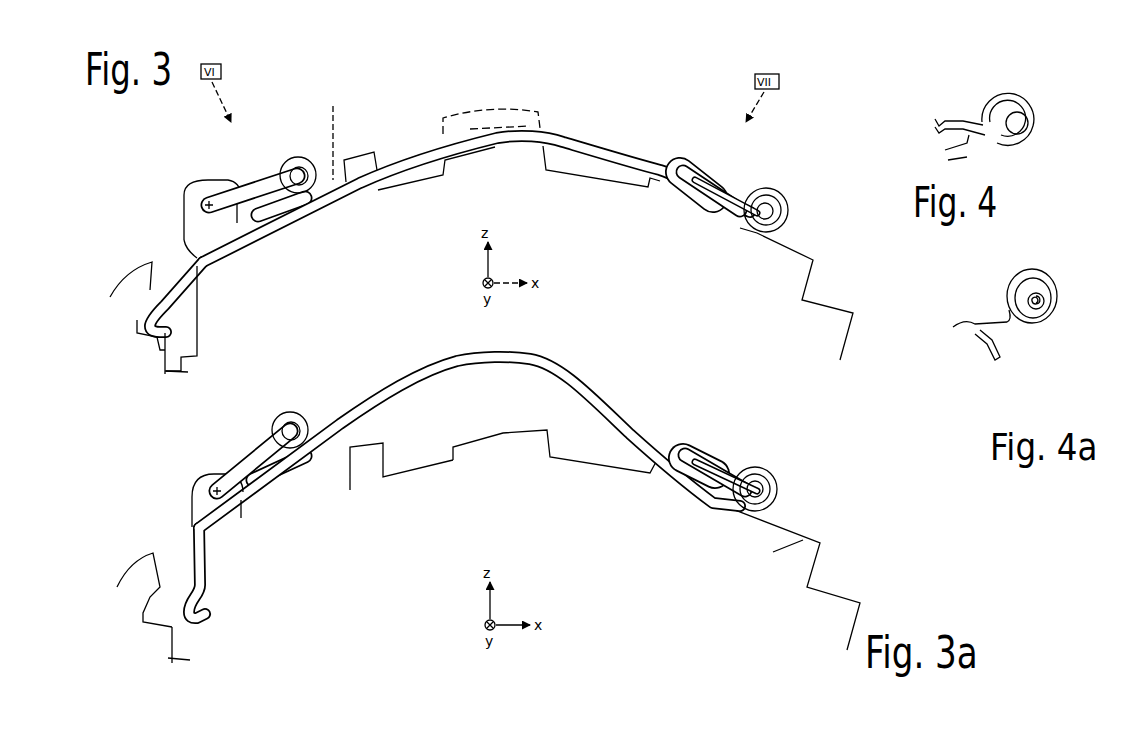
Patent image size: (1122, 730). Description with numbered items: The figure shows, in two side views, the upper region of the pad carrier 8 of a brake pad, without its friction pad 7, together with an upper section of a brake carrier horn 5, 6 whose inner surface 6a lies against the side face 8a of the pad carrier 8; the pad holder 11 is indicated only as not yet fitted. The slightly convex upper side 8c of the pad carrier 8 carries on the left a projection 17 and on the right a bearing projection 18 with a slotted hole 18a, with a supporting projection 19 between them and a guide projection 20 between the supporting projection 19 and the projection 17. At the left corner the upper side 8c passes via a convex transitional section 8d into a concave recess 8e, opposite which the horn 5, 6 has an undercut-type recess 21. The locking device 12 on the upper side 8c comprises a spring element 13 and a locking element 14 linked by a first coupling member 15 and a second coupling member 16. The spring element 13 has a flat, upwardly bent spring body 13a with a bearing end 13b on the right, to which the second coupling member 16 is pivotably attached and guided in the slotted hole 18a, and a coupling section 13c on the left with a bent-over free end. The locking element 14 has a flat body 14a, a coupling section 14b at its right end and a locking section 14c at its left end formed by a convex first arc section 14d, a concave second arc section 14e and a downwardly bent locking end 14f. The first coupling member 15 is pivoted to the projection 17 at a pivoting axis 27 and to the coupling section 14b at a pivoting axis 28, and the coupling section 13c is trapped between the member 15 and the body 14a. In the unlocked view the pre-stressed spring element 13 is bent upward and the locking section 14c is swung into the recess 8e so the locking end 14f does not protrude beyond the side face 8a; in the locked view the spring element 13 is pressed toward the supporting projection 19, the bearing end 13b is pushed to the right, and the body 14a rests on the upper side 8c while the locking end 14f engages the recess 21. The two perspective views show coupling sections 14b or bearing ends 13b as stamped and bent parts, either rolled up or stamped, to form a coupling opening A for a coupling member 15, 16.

In FIG. 3, the brake carrier horn 5 is at (115, 284).
In FIG. 3A, the brake carrier horn 5 is at (112, 587).
In FIG. 3, the brake carrier horn 6 is at (120, 287).
In FIG. 3A, the brake carrier horn 6 is at (125, 578).
In FIG. 3, the inner surface 6a is at (180, 373).
In FIG. 3A, the inner surface 6a is at (185, 660).
In FIG. 3, the friction pad 7 is at (519, 149).
In FIG. 3A, the friction pad 7 is at (805, 577).
In FIG. 3, the pad carrier 8 is at (592, 190).
In FIG. 3A, the pad carrier 8 is at (805, 542).
In FIG. 3, the side face 8a is at (163, 372).
In FIG. 3A, the side face 8a is at (183, 645).
In FIG. 3, the upper side 8c is at (828, 212).
In FIG. 3, the transitional section 8d is at (228, 268).
In FIG. 3A, the transitional section 8d is at (237, 546).
In FIG. 3, the recess 8e is at (199, 357).
In FIG. 3A, the recess 8e is at (208, 598).
In FIG. 3, the pad holder 11 is at (520, 106).
In FIG. 3, the locking device 12 is at (430, 104).
In FIG. 3A, the locking device 12 is at (446, 340).
In FIG. 3, the spring element 13 is at (434, 234).
In FIG. 3A, the spring element 13 is at (464, 467).
In FIG. 3, the spring body 13a is at (428, 148).
In FIG. 3A, the spring body 13a is at (386, 388).
In FIG. 4, the spring body 13a is at (942, 117).
In FIG. 4A, the spring body 13a is at (992, 362).
In FIG. 3, the bearing end 13b is at (756, 236).
In FIG. 3A, the bearing end 13b is at (772, 490).
In FIG. 4, the bearing end 13b is at (1023, 117).
In FIG. 4A, the bearing end 13b is at (1042, 289).
In FIG. 3, the coupling section 13c is at (280, 222).
In FIG. 3A, the coupling section 13c is at (302, 482).
In FIG. 3, the locking element 14 is at (176, 265).
In FIG. 3A, the locking element 14 is at (290, 494).
In FIG. 3, the body 14a is at (245, 250).
In FIG. 3A, the body 14a is at (243, 508).
In FIG. 4, the body 14a is at (942, 119).
In FIG. 4A, the body 14a is at (996, 362).
In FIG. 3, the coupling section 14b is at (295, 114).
In FIG. 3A, the coupling section 14b is at (303, 393).
In FIG. 4, the coupling section 14b is at (1023, 117).
In FIG. 4A, the coupling section 14b is at (1042, 289).
In FIG. 3, the locking section 14c is at (158, 348).
In FIG. 3A, the locking section 14c is at (205, 610).
In FIG. 3, the first arc section 14d is at (206, 266).
In FIG. 3A, the first arc section 14d is at (194, 530).
In FIG. 3, the second arc section 14e is at (176, 290).
In FIG. 3A, the second arc section 14e is at (195, 575).
In FIG. 3, the locking end 14f is at (140, 323).
In FIG. 3A, the locking end 14f is at (195, 625).
In FIG. 3, the first coupling member 15 is at (250, 183).
In FIG. 3A, the first coupling member 15 is at (250, 480).
In FIG. 3, the second coupling member 16 is at (748, 190).
In FIG. 3A, the second coupling member 16 is at (733, 467).
In FIG. 3, the projection 17 is at (188, 182).
In FIG. 3A, the projection 17 is at (190, 488).
In FIG. 3, the bearing projection 18 is at (667, 158).
In FIG. 3A, the bearing projection 18 is at (675, 444).
In FIG. 3, the slotted hole 18a is at (692, 160).
In FIG. 3A, the slotted hole 18a is at (693, 440).
In FIG. 3, the supporting projection 19 is at (508, 153).
In FIG. 3A, the supporting projection 19 is at (492, 445).
In FIG. 3, the guide projection 20 is at (358, 158).
In FIG. 3A, the guide projection 20 is at (388, 468).
In FIG. 3, the recess 21 is at (140, 258).
In FIG. 3A, the recess 21 is at (145, 608).
In FIG. 3, the pivoting axis 27 is at (209, 198).
In FIG. 3A, the pivoting axis 27 is at (214, 482).
In FIG. 3, the pivoting axis 28 is at (290, 170).
In FIG. 3A, the pivoting axis 28 is at (287, 415).
In FIG. 4, the coupling opening A is at (1017, 136).
In FIG. 4A, the coupling opening A is at (1044, 320).